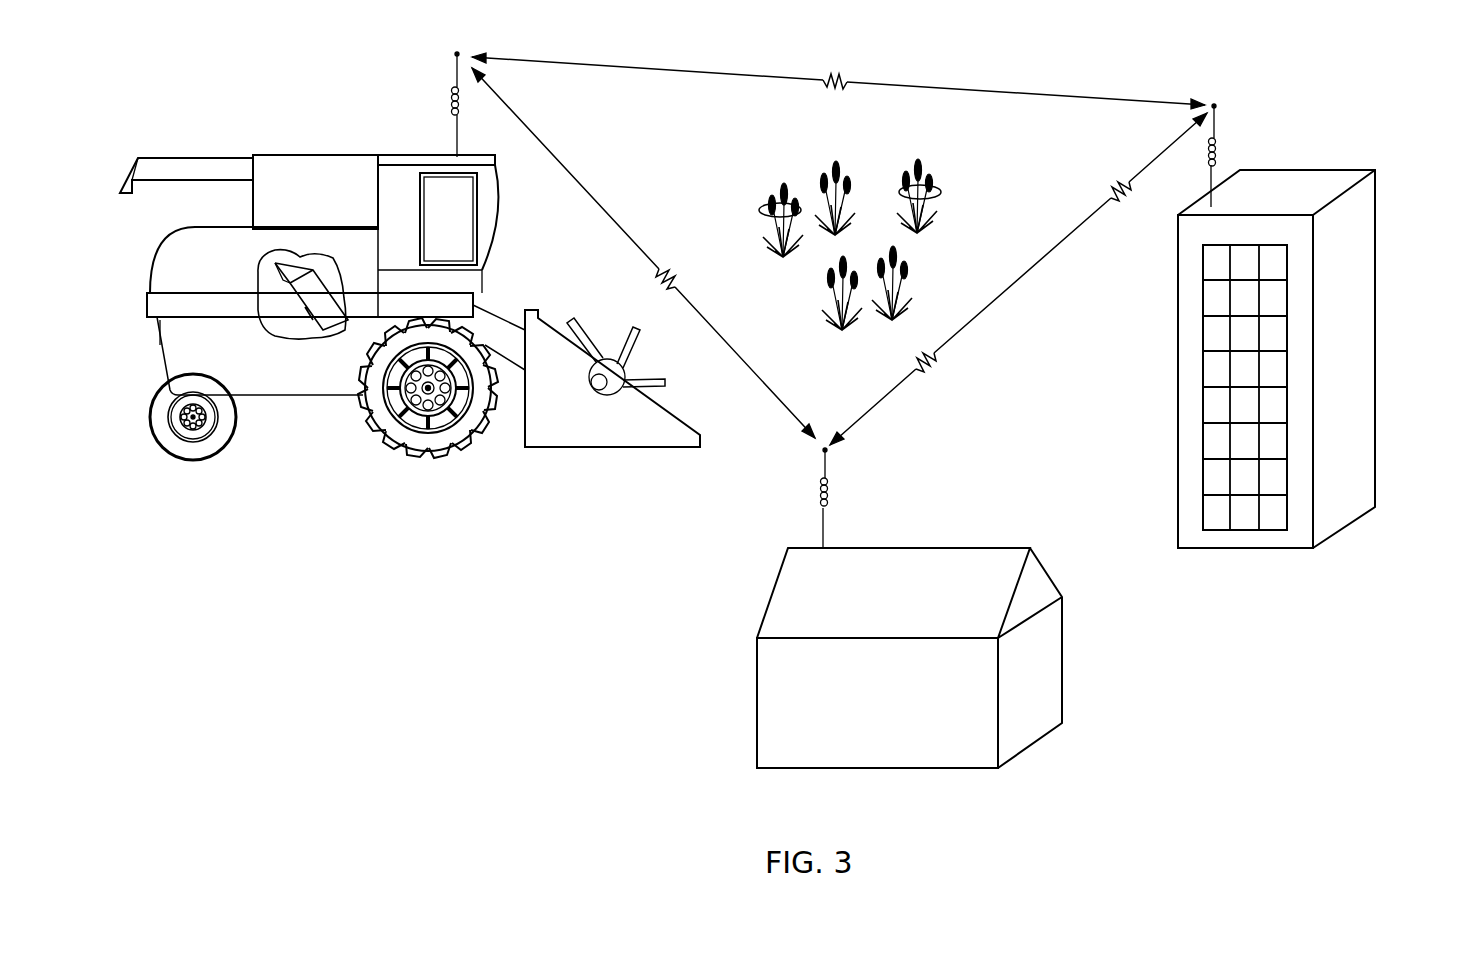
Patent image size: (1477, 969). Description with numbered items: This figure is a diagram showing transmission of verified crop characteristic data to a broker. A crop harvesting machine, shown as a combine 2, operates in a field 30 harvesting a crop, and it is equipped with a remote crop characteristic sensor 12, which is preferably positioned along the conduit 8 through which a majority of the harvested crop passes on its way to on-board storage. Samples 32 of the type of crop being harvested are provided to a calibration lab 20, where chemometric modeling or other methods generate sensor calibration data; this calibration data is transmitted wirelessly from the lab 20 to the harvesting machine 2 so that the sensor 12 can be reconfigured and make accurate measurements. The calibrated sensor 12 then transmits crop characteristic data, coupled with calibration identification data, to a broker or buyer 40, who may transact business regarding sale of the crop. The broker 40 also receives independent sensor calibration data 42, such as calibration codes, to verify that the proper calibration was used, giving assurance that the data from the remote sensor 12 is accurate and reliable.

The combine 2 is at (410, 137).
The conduit 8 is at (300, 258).
The remote crop characteristic sensor 12 is at (298, 318).
The calibration lab 20 is at (1033, 670).
The field 30 is at (853, 163).
The samples 32 is at (762, 210).
The broker or buyer 40 is at (1348, 362).
The independent sensor calibration data 42 is at (1015, 285).